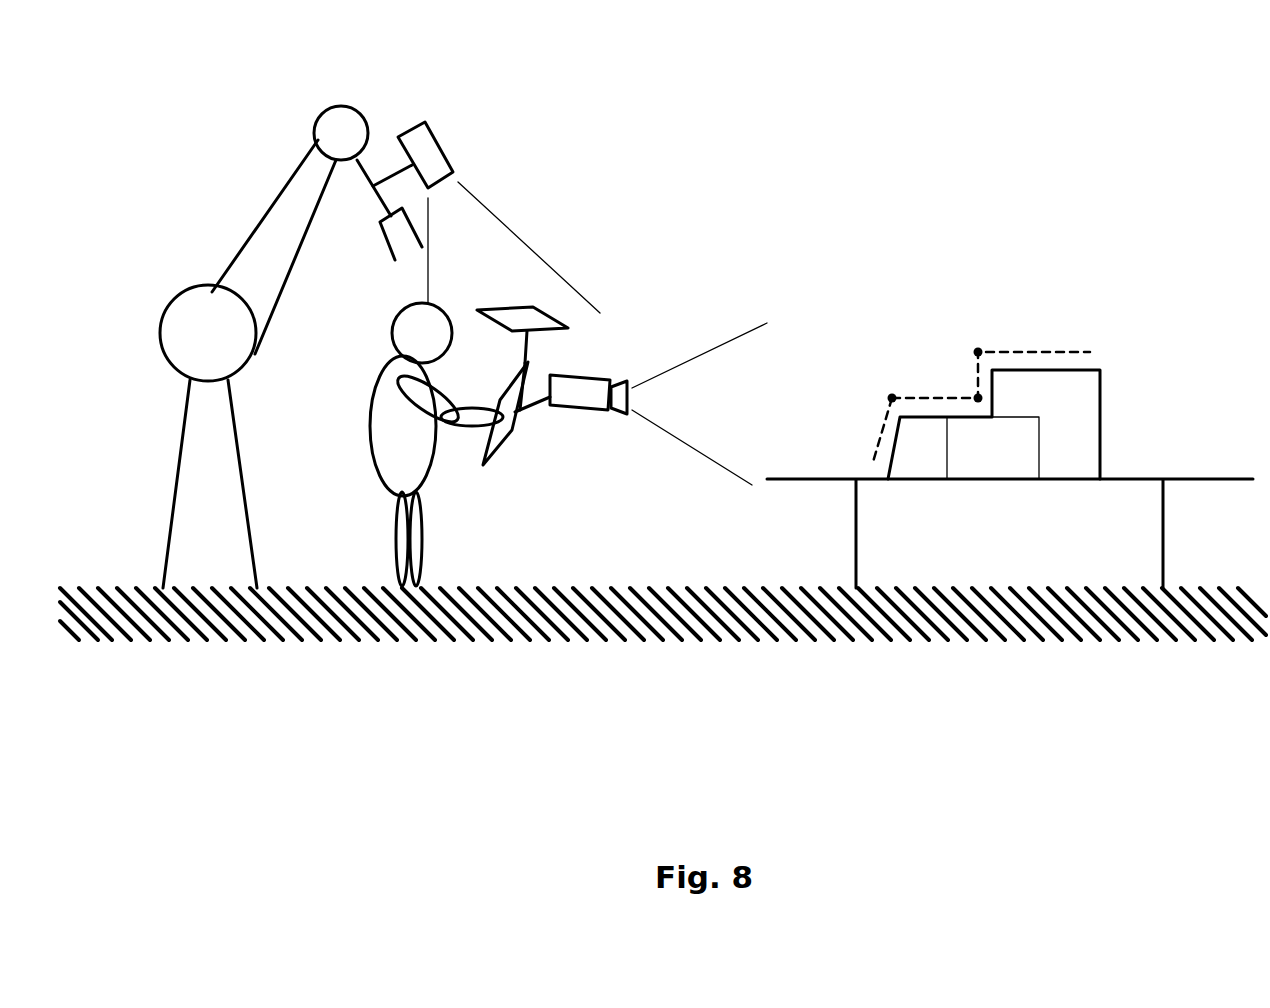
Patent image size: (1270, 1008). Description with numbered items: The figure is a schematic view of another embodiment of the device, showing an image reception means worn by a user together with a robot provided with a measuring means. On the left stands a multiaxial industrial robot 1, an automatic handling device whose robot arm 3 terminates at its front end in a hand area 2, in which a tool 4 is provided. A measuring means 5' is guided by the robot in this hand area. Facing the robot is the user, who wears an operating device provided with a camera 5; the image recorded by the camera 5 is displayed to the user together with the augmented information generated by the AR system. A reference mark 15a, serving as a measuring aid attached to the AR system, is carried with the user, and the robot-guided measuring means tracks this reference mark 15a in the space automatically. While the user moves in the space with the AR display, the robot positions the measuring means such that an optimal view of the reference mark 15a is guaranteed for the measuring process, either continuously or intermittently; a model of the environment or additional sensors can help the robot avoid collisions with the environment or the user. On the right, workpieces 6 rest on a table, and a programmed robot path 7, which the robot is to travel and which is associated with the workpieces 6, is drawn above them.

The multiaxial industrial robot 1 is at (150, 487).
The hand area 2 is at (340, 122).
The robot arm 3 is at (262, 226).
The tool 4 is at (373, 195).
The camera 5 is at (641, 404).
The robot-mounted camera 5' is at (499, 211).
The workpieces 6 is at (1083, 405).
The programmed robot path 7 is at (1060, 352).
The reference mark 15a is at (532, 308).